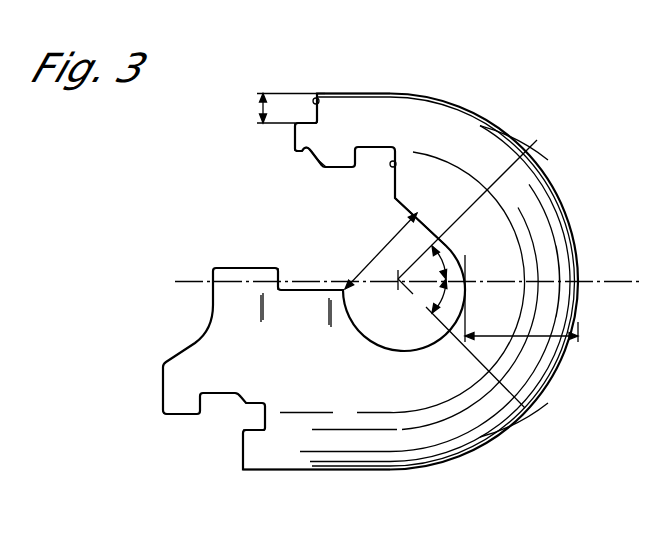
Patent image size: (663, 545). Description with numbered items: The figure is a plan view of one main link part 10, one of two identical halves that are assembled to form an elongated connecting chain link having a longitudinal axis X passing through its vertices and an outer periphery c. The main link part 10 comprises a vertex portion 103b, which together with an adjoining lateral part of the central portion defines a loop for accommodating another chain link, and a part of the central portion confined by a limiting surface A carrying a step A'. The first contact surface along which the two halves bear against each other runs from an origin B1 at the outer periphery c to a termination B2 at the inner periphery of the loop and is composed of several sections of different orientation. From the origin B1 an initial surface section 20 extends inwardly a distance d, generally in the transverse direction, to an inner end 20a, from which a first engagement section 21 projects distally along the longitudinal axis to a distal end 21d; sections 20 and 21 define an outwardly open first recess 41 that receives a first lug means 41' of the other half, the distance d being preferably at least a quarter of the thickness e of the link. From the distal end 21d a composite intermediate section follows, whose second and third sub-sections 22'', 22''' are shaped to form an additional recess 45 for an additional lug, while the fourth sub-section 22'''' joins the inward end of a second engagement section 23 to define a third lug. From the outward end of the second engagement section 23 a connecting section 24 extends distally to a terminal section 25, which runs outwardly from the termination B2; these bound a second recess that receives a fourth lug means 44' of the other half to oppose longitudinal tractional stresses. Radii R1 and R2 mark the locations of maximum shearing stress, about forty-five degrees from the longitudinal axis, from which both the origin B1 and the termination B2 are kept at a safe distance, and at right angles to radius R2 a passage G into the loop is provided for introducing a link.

The main link part 10 is at (548, 160).
The initial surface section 20 is at (322, 100).
The inner end 20a is at (318, 127).
The first engagement section 21 is at (292, 123).
The distal end 21d is at (290, 131).
The second sub-section 22'' is at (287, 173).
The third sub-section 22''' is at (305, 179).
The fourth sub-section 22'''' is at (333, 188).
The second engagement section 23 is at (352, 169).
The connecting section 24 is at (381, 146).
The terminal section 25 is at (397, 166).
The first recess 41 is at (287, 93).
The first lug means 41' is at (316, 481).
The fourth lug means 44' is at (160, 397).
The vertex portion 103b is at (517, 267).
The limiting surface A is at (363, 251).
The step A' is at (291, 272).
The origin B1 is at (313, 99).
The termination B2 is at (395, 198).
The passage G is at (373, 267).
The longitudinal axis X is at (407, 270).
The outer periphery c is at (323, 96).
The distance d is at (279, 109).
The thickness e is at (521, 298).
The radius R1 is at (515, 146).
The radius R2 is at (530, 412).
The additional recess 45 is at (420, 306).